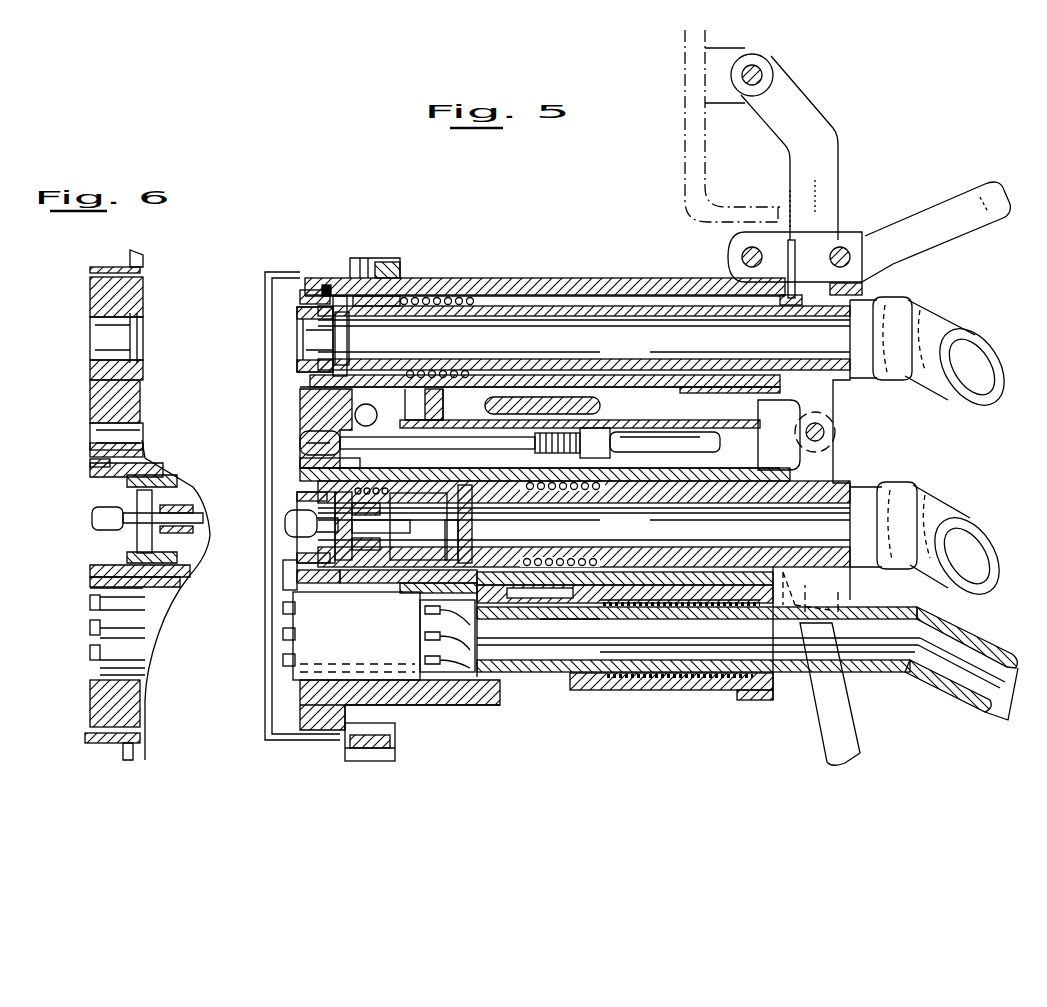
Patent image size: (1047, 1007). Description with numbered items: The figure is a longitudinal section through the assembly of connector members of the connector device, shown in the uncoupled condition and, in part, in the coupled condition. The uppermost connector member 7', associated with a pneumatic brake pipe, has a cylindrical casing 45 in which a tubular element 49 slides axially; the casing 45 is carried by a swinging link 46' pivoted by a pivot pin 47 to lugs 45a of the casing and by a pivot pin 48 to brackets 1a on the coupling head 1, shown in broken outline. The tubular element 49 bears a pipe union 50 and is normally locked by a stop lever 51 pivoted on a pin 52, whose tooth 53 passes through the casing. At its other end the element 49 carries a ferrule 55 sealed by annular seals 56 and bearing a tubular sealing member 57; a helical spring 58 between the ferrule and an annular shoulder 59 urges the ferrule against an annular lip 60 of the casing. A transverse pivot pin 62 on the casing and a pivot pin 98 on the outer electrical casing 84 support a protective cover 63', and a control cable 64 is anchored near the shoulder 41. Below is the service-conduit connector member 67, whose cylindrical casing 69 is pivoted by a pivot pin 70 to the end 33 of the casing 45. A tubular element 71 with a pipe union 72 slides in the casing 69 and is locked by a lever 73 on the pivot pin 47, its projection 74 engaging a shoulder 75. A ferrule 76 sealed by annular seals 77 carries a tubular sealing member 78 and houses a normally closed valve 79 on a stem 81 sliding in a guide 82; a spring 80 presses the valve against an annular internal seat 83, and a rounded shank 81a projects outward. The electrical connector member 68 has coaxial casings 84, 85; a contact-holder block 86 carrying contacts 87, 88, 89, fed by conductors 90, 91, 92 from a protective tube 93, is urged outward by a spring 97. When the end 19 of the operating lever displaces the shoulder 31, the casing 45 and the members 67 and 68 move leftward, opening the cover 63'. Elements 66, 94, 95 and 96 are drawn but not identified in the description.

In FIG. 5, the coupling head 1 is at (670, 82).
In FIG. 5, the brackets 1a is at (715, 88).
In FIG. 5, the connector member 7' is at (545, 261).
In FIG. 5, the end of the operating lever 19 is at (515, 400).
In FIG. 5, the shoulder 31 is at (444, 407).
In FIG. 5, the end of the casing 33 is at (330, 276).
In FIG. 5, the shoulder 41 is at (612, 406).
In FIG. 5, the cylindrical casing 45 is at (457, 278).
In FIG. 5, the lugs 45a is at (758, 412).
In FIG. 5, the swinging link 46' is at (808, 148).
In FIG. 5, the pivot pin 47 is at (824, 430).
In FIG. 5, the pivot pin 48 is at (765, 72).
In FIG. 5, the tubular element 49 is at (553, 318).
In FIG. 5, the pipe union 50 is at (950, 338).
In FIG. 5, the stop lever 51 is at (955, 212).
In FIG. 5, the pin 52 is at (742, 257).
In FIG. 5, the tooth 53 is at (793, 262).
In FIG. 5, the ferrule 55 is at (340, 296).
In FIG. 5, the annular seals 56 is at (370, 310).
In FIG. 5, the tubular sealing member 57 is at (286, 324).
In FIG. 6, the tubular sealing member 57 is at (80, 310).
In FIG. 5, the helical spring 58 is at (440, 308).
In FIG. 5, the annular shoulder 59 is at (476, 298).
In FIG. 5, the annular lip 60 is at (300, 290).
In FIG. 5, the transverse pivot pin 62 is at (368, 268).
In FIG. 5, the protective cover 63' is at (284, 506).
In FIG. 5, the cable 64 is at (330, 465).
In FIG. 6, the cable 64 is at (92, 434).
In FIG. 5, the pin 66 is at (847, 248).
In FIG. 5, the connector member 67 is at (640, 448).
In FIG. 5, the connector member 68 is at (532, 685).
In FIG. 5, the cylindrical casing 69 is at (385, 490).
In FIG. 5, the pivot pin 70 is at (352, 422).
In FIG. 5, the tubular element 71 is at (660, 548).
In FIG. 5, the pipe union 72 is at (945, 575).
In FIG. 5, the lever 73 is at (843, 722).
In FIG. 5, the projection 74 is at (793, 598).
In FIG. 5, the shoulder 75 is at (782, 572).
In FIG. 5, the ferrule 76 is at (464, 556).
In FIG. 5, the annular seals 77 is at (490, 545).
In FIG. 5, the tubular sealing member 78 is at (282, 497).
In FIG. 6, the tubular sealing member 78 is at (78, 496).
In FIG. 5, the valve 79 is at (338, 572).
In FIG. 6, the valve 79 is at (132, 528).
In FIG. 5, the spring 80 is at (388, 530).
In FIG. 5, the stem 81 is at (386, 574).
In FIG. 5, the rounded shank 81a is at (285, 572).
In FIG. 6, the rounded shank 81a is at (98, 520).
In FIG. 5, the guide 82 is at (395, 514).
In FIG. 5, the annular internal seat 83 is at (300, 535).
In FIG. 6, the annular internal seat 83 is at (88, 462).
In FIG. 5, the tubular casing 84 is at (487, 705).
In FIG. 5, the tubular casing 85 is at (633, 692).
In FIG. 5, the contact-holder block 86 is at (302, 698).
In FIG. 5, the contact 87 is at (296, 610).
In FIG. 6, the contact 87 is at (85, 605).
In FIG. 5, the contact 88 is at (296, 636).
In FIG. 6, the contact 88 is at (88, 634).
In FIG. 5, the contact 89 is at (296, 660).
In FIG. 6, the contact 89 is at (88, 658).
In FIG. 5, the electrical conductor 90 is at (425, 612).
In FIG. 5, the electrical conductor 91 is at (428, 645).
In FIG. 5, the electrical conductor 92 is at (445, 705).
In FIG. 5, the protective tube 93 is at (562, 674).
In FIG. 5, the spring 94 is at (553, 490).
In FIG. 5, the spring 95 is at (610, 558).
In FIG. 5, the connector housing 96 is at (318, 593).
In FIG. 5, the spring 97 is at (692, 690).
In FIG. 5, the pivot pin 98 is at (362, 742).